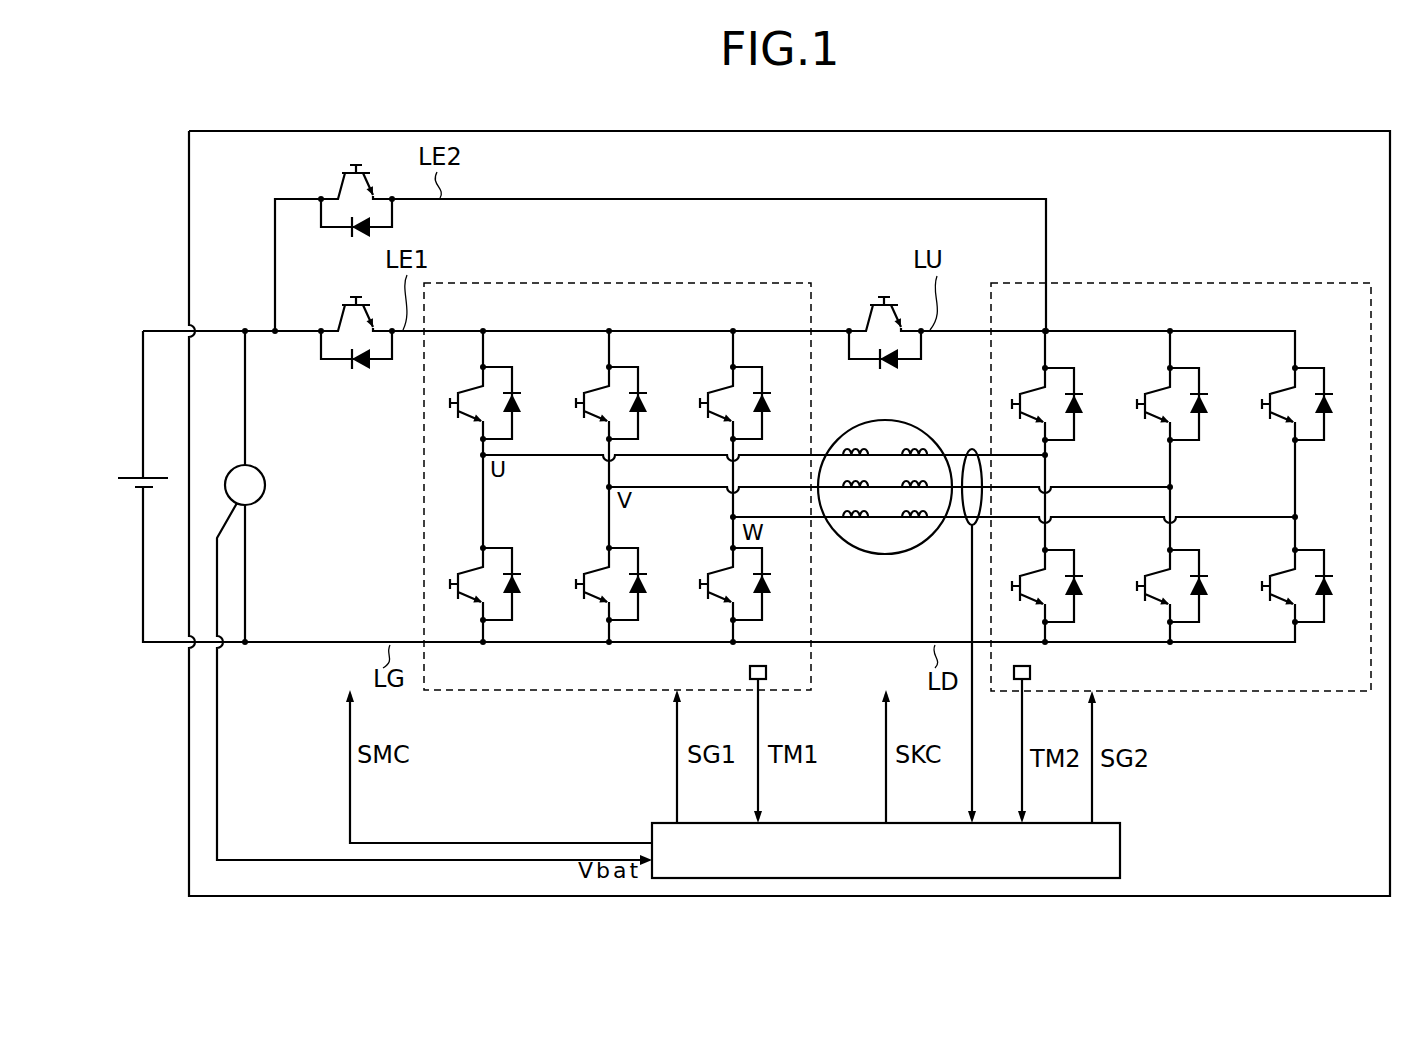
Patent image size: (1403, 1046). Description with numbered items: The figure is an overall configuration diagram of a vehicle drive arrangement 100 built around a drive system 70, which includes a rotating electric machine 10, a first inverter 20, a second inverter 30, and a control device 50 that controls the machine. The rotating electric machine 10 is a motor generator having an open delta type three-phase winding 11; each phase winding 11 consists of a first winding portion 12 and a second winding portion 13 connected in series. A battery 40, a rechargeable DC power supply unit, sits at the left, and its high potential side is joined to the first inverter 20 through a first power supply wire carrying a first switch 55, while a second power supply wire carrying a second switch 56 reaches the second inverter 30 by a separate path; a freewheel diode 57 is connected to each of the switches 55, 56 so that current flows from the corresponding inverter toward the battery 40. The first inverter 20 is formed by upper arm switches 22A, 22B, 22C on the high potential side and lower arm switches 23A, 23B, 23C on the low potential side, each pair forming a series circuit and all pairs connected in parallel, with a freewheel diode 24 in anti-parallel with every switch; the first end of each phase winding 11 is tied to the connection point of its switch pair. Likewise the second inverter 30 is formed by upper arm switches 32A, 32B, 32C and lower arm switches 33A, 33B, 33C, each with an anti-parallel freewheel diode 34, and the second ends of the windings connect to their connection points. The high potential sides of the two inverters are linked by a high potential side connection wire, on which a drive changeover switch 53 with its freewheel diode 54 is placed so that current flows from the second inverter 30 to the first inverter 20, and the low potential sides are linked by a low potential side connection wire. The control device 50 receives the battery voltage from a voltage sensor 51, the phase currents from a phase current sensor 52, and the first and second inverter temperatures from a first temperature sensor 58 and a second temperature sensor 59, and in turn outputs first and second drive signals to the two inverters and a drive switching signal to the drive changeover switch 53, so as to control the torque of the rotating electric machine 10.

The power conversion system 100 is at (1294, 116).
The drive system 70 is at (1168, 131).
The rotating electric machine 10 is at (885, 556).
The winding 11 is at (853, 436).
The first winding portion 12 is at (866, 447).
The second winding portion 13 is at (924, 447).
The first inverter 20 is at (752, 282).
The upper arm switch 22A is at (457, 397).
The upper arm switch 22B is at (583, 397).
The upper arm switch 22C is at (707, 397).
The lower arm switch 23A is at (457, 578).
The lower arm switch 23B is at (583, 578).
The lower arm switch 23C is at (707, 578).
The freewheel diode 24 is at (645, 498).
The second inverter 30 is at (1302, 282).
The upper arm switch 32A is at (1019, 398).
The upper arm switch 32B is at (1144, 398).
The upper arm switch 32C is at (1269, 398).
The lower arm switch 33A is at (1019, 580).
The lower arm switch 33B is at (1144, 580).
The lower arm switch 33C is at (1269, 580).
The freewheel diode 34 is at (1207, 499).
The battery 40 is at (131, 476).
The control device 50 is at (1120, 852).
The voltage sensor 51 is at (262, 470).
The phase current sensor 52 is at (968, 530).
The drive changeover switch 53 is at (866, 318).
The freewheel diode 54 is at (903, 362).
The first switch 55 is at (346, 322).
The second switch 56 is at (342, 183).
The freewheel diode 57 is at (357, 238).
The first temperature sensor 58 is at (750, 673).
The second temperature sensor 59 is at (1030, 673).